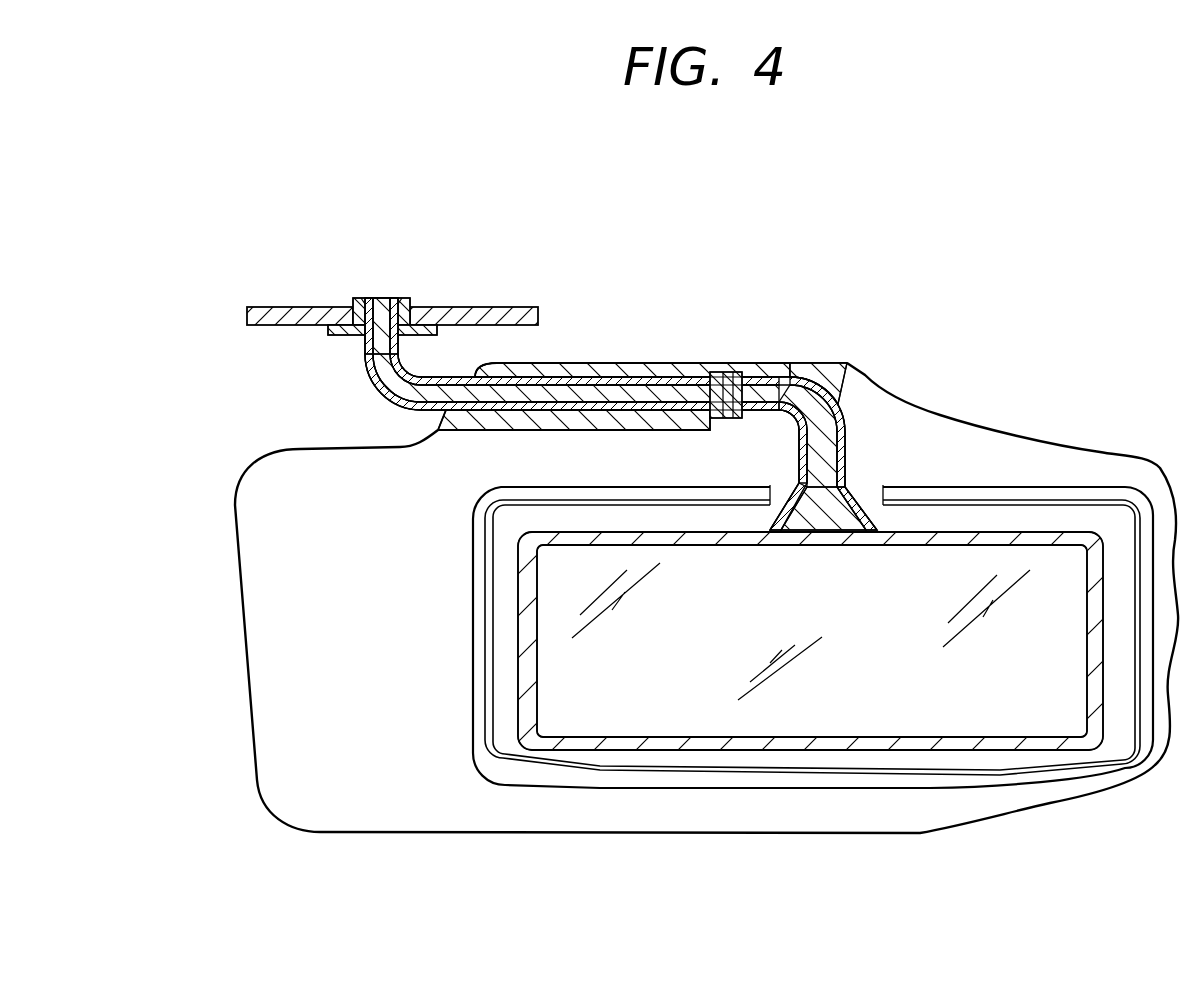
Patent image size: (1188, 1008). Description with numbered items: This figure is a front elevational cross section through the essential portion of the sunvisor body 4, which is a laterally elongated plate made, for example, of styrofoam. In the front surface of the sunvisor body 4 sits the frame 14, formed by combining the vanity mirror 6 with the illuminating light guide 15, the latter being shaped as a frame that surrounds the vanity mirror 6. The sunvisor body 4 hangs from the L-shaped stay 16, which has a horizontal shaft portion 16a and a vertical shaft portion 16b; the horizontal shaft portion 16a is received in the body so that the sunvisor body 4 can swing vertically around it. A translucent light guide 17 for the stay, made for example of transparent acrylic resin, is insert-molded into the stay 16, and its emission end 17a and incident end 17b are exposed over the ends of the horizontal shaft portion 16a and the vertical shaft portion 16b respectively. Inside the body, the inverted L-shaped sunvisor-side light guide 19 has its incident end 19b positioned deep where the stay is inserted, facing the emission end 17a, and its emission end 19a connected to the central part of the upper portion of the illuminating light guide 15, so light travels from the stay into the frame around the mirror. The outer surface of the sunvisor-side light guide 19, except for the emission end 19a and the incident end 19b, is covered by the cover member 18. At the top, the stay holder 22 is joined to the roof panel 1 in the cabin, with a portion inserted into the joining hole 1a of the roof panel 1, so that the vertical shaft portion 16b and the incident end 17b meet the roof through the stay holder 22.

The roof panel 1 is at (392, 278).
The joining hole 1a is at (320, 306).
The sunvisor body 4 is at (245, 670).
The vanity mirror 6 is at (620, 708).
The frame 14 is at (847, 777).
The illuminating light guide 15 is at (993, 743).
The stay 16 is at (368, 330).
The horizontal shaft portion 16a is at (593, 375).
The vertical shaft portion 16b is at (363, 347).
The light guide for the stay 17 is at (699, 377).
The emission end 17a is at (688, 432).
The incident end 17b is at (380, 300).
The cover member 18 is at (800, 368).
The sunvisor-side light guide 19 is at (827, 397).
The emission end 19a is at (862, 548).
The incident end 19b is at (664, 393).
The stay holder 22 is at (407, 302).